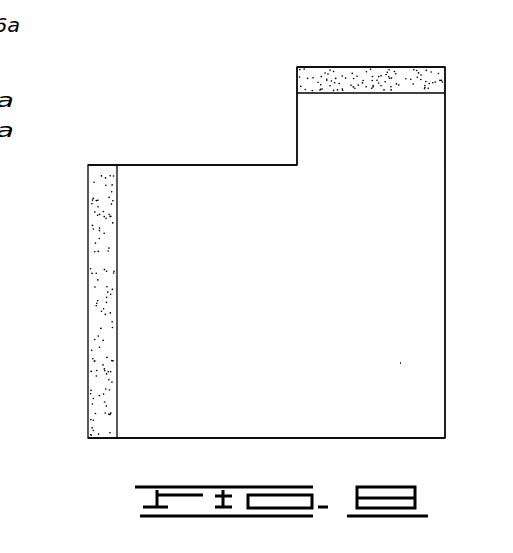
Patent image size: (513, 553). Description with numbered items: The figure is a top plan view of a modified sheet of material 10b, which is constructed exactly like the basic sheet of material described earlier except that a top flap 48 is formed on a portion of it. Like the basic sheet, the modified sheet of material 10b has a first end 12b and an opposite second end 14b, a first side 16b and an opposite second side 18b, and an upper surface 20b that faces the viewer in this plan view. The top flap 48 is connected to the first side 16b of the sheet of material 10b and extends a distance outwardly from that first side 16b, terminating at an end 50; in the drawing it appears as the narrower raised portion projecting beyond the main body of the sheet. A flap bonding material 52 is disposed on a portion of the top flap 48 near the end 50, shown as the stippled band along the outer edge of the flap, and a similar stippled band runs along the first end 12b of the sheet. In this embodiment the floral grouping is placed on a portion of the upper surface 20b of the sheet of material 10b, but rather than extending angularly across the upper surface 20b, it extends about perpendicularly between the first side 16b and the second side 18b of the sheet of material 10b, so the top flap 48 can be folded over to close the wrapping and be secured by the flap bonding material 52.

The modified sheet of material 10b is at (86, 369).
The first end 12b is at (88, 280).
The second end 14b is at (445, 243).
The first side 16b is at (217, 163).
The second side 18b is at (272, 438).
The upper surface 20b is at (398, 365).
The top flap 48 is at (318, 123).
The end 50 is at (353, 67).
The flap bonding material 52 is at (325, 75).